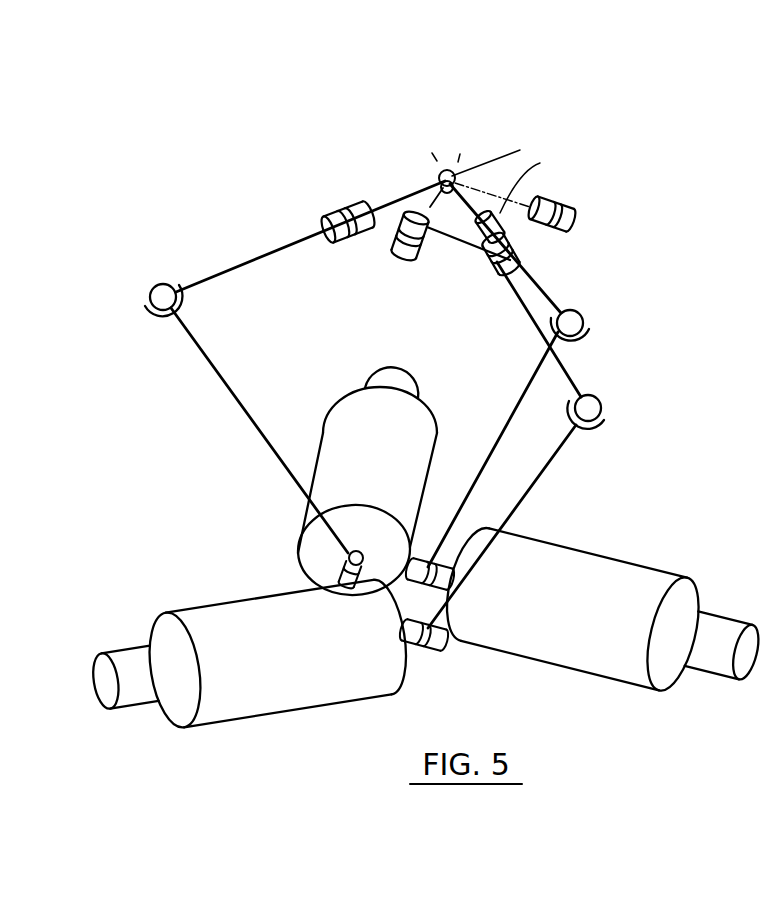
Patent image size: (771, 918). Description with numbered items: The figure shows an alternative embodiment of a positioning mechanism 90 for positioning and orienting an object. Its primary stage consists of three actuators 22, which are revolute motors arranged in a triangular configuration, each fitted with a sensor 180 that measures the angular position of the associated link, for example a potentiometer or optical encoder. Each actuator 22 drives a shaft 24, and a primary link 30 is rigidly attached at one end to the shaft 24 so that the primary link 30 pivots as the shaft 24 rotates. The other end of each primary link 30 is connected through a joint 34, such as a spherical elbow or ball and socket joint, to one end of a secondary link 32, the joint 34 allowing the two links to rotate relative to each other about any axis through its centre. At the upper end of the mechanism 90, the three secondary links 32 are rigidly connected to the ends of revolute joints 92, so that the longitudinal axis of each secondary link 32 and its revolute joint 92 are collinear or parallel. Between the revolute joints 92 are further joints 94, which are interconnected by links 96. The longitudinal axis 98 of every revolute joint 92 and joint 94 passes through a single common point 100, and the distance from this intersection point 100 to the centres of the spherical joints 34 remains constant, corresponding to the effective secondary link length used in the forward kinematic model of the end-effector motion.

The positioning mechanism 90 is at (627, 121).
The common intersection point 100 is at (440, 172).
The revolute joint 92 is at (347, 210).
The joint 94 is at (452, 170).
The link 96 is at (473, 195).
The longitudinal axis 98 is at (520, 150).
The secondary link 32 is at (233, 268).
The joint 34 is at (165, 290).
The primary link 30 is at (262, 433).
The shaft 24 is at (343, 572).
The actuator 22 is at (341, 407).
The sensor 180 is at (387, 373).